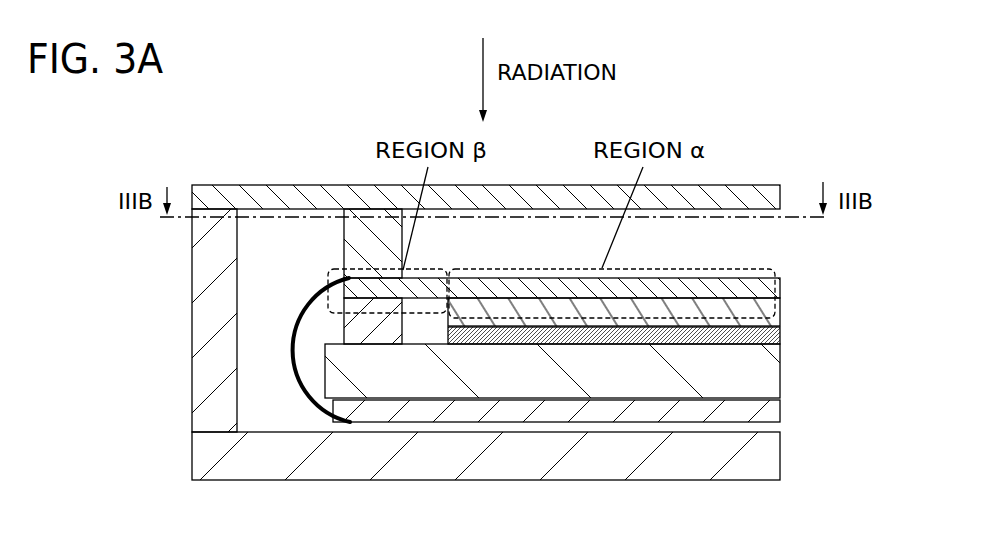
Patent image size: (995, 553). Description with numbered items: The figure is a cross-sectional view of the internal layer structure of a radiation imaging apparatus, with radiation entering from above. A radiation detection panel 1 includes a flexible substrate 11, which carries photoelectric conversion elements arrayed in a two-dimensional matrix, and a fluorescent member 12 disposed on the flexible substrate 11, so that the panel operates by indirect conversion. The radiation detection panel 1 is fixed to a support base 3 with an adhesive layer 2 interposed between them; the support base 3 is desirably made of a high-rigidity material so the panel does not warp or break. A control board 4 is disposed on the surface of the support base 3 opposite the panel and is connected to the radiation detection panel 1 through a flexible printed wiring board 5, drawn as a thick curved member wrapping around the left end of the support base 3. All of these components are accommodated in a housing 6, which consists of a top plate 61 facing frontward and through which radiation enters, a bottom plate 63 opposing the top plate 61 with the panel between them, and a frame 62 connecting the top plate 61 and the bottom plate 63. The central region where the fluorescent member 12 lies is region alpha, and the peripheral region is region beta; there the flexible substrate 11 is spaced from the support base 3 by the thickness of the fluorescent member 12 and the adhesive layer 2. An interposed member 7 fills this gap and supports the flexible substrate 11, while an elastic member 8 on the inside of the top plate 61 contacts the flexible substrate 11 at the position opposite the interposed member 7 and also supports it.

The radiation detection panel 1 is at (835, 242).
The adhesive layer 2 is at (770, 340).
The support base 3 is at (760, 368).
The control board 4 is at (762, 410).
The flexible printed wiring board 5 is at (318, 417).
The housing 6 is at (100, 152).
The interposed member 7 is at (362, 328).
The elastic member 8 is at (360, 258).
The flexible substrate 11 is at (757, 290).
The fluorescent member 12 is at (757, 314).
The top plate 61 is at (227, 200).
The frame 62 is at (215, 317).
The bottom plate 63 is at (222, 447).